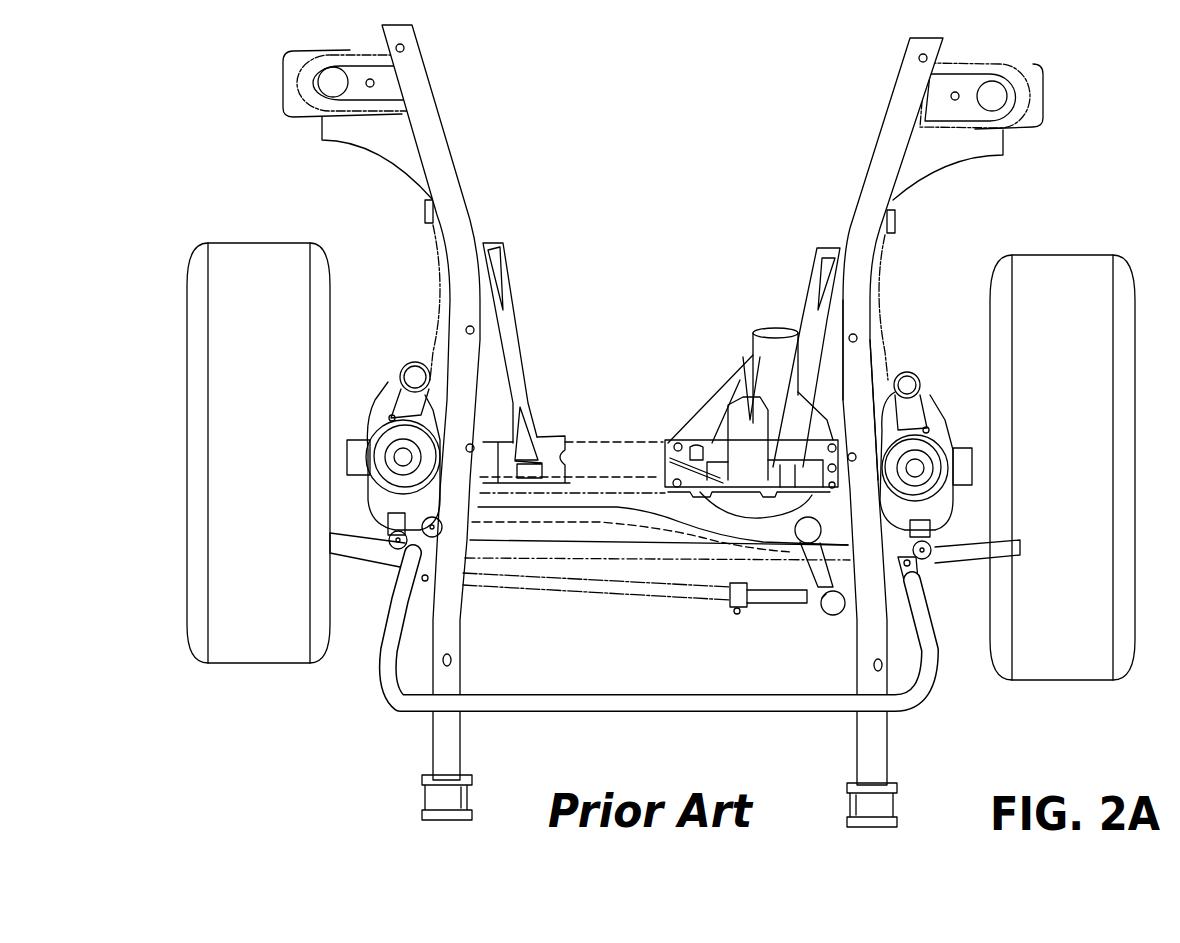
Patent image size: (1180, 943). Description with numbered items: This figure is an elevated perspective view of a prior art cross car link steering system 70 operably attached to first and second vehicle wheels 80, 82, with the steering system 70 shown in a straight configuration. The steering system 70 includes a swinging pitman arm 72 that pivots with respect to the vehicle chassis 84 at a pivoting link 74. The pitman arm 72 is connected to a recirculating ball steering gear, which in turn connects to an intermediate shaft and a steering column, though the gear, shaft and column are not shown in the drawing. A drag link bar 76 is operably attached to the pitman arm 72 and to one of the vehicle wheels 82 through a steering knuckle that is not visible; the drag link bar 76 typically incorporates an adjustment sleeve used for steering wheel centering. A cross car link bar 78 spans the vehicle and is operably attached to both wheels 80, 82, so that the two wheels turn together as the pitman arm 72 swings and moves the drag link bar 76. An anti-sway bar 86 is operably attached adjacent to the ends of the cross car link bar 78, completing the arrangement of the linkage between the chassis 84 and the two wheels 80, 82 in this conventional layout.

The cross car link steering system 70 is at (505, 603).
The pitman arm 72 is at (810, 555).
The pivoting link 74 is at (826, 598).
The drag link bar 76 is at (640, 580).
The cross car link bar 78 is at (619, 545).
The first vehicle wheel 80 is at (258, 367).
The second vehicle wheel 82 is at (1030, 360).
The vehicle chassis 84 is at (855, 235).
The anti-sway bar 86 is at (551, 700).